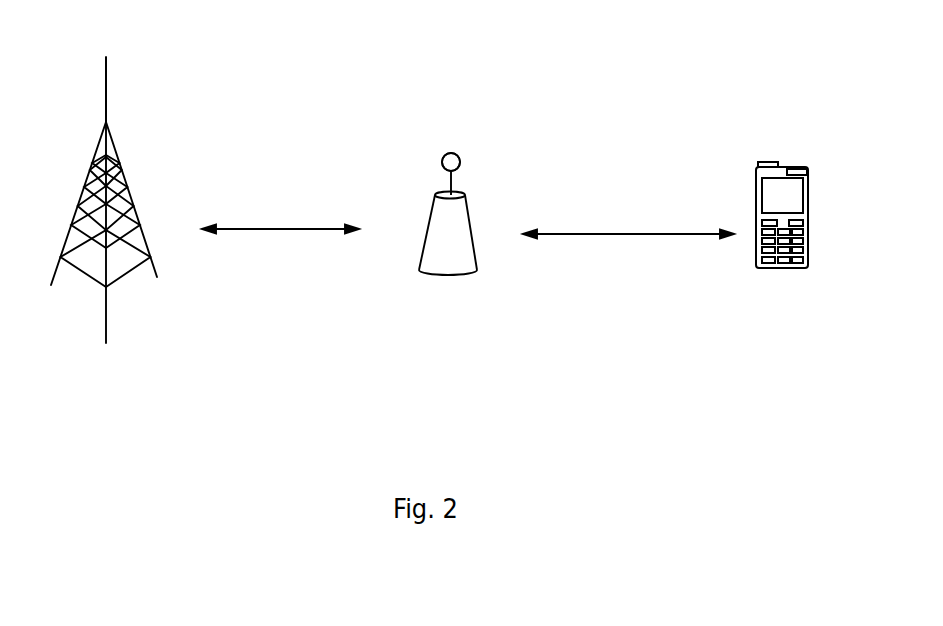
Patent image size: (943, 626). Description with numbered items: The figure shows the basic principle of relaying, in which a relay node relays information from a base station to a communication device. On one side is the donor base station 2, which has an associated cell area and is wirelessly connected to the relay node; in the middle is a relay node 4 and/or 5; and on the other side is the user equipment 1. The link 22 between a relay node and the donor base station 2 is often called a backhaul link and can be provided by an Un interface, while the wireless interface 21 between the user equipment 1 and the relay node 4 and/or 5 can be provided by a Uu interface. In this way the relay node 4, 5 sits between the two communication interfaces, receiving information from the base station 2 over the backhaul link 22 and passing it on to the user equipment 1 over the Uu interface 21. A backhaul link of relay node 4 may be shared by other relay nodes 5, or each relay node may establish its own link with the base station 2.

The user equipment 1 is at (789, 163).
The base station 2 is at (104, 187).
The relay node 4 is at (425, 157).
The relay node 5 is at (451, 162).
The wireless interface 21 is at (685, 232).
The link 22 is at (280, 225).